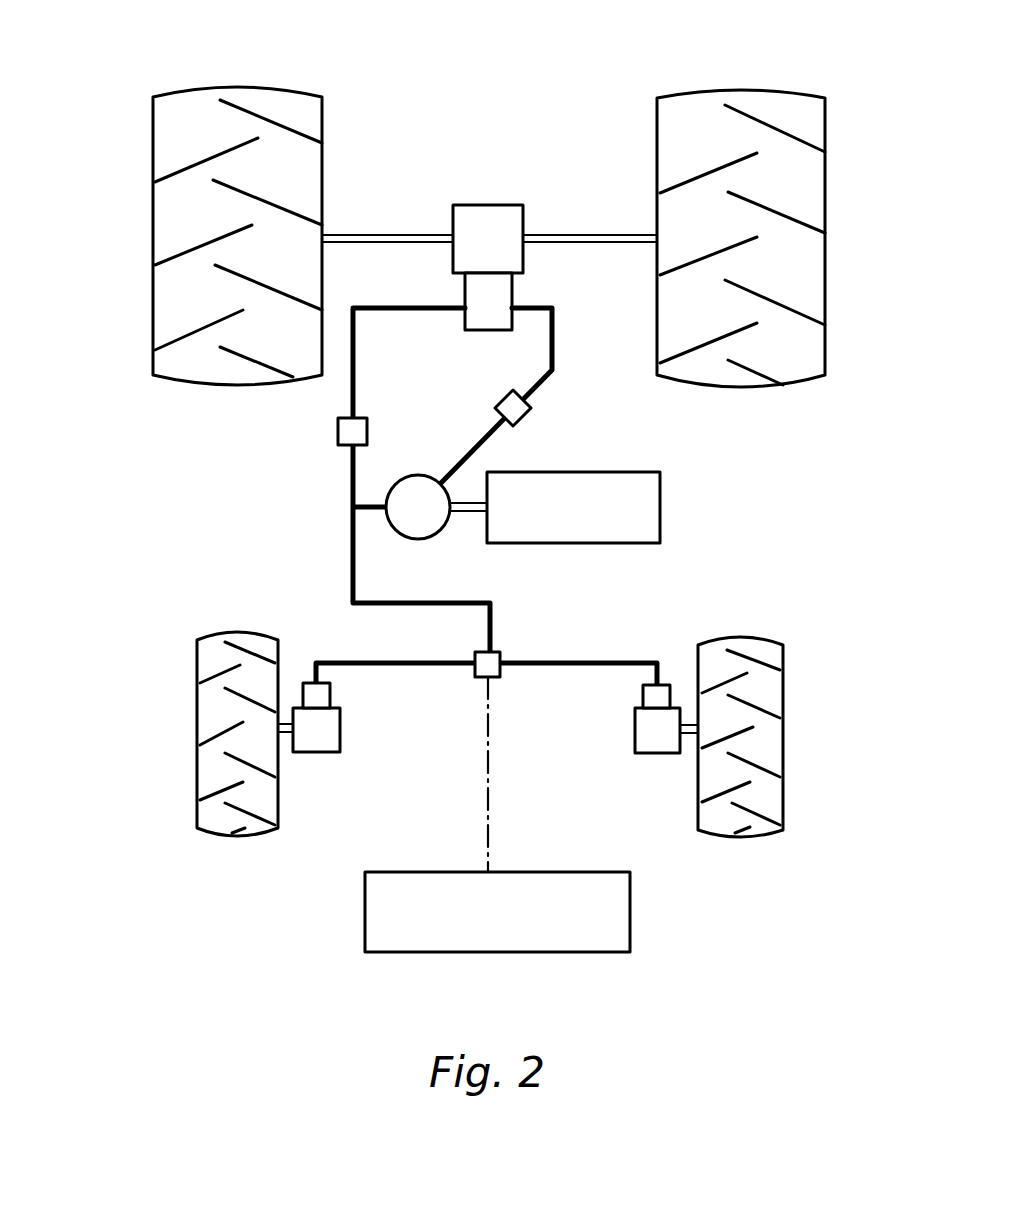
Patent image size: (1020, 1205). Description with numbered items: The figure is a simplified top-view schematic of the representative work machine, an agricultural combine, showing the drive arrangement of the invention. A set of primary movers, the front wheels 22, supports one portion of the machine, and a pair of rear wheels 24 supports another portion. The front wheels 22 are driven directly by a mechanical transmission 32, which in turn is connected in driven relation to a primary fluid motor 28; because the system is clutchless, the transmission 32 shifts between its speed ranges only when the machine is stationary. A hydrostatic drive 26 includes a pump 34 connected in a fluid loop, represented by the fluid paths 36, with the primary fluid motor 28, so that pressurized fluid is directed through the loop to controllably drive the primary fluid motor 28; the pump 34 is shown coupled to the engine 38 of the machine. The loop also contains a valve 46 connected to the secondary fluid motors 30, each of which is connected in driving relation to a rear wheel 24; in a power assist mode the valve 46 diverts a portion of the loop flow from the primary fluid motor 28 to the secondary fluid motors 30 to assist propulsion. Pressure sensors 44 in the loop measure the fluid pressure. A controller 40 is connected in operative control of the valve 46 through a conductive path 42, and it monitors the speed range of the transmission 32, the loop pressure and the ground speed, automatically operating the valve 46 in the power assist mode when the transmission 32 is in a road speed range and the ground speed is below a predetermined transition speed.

The front wheels 22 is at (153, 165).
The rear wheels 24 is at (197, 745).
The hydrostatic drive 26 is at (460, 133).
The primary fluid motor 28 is at (513, 291).
The secondary fluid motor 30 is at (341, 735).
The mechanical transmission 32 is at (493, 203).
The pump 34 is at (420, 476).
The fluid paths 36 is at (350, 402).
The engine 38 is at (660, 510).
The controller 40 is at (630, 920).
The conductive path 42 is at (490, 848).
The pressure sensors 44 is at (342, 441).
The valve 46 is at (500, 673).